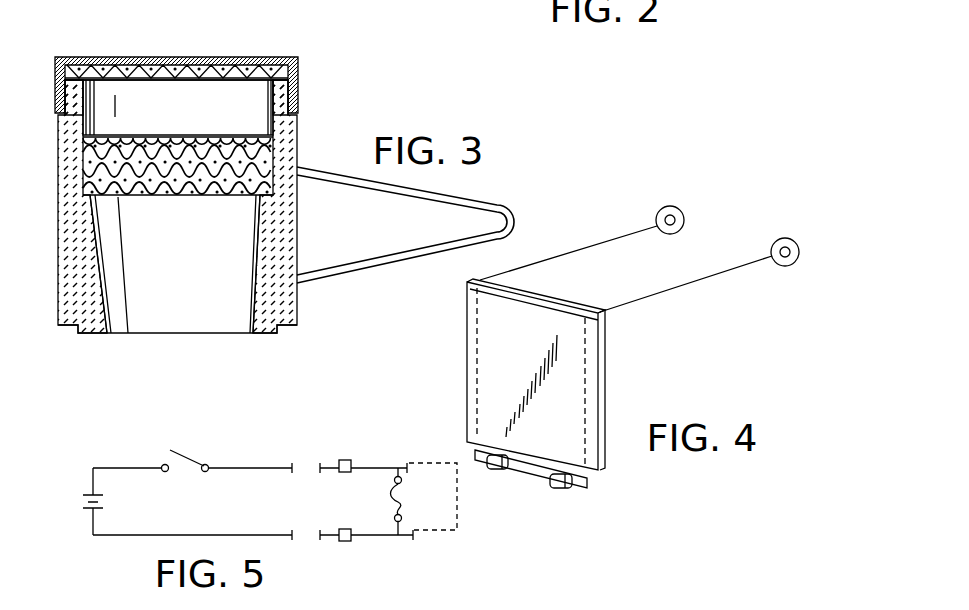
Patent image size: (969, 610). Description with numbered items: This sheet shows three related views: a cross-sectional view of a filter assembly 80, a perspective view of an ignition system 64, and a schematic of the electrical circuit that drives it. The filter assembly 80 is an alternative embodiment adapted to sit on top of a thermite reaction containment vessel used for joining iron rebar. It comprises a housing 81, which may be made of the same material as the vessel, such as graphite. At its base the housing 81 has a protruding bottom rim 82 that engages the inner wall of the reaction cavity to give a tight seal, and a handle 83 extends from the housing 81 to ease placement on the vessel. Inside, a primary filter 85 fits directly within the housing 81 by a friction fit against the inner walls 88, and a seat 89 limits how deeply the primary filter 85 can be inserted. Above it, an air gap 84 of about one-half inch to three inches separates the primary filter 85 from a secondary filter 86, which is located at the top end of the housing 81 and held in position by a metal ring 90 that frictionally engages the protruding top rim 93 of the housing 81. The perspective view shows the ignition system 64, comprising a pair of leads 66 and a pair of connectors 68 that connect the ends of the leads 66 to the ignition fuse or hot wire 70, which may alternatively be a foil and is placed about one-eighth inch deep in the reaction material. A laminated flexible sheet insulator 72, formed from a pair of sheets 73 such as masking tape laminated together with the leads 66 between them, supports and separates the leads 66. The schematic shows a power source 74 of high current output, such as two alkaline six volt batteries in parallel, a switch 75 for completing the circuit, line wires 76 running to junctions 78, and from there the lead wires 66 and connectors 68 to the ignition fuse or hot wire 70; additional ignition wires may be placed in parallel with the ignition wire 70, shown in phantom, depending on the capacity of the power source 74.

In FIG. 4, the ignition system 64 is at (597, 241).
In FIG. 4, the leads 66 is at (615, 240).
In FIG. 5, the leads 66 is at (377, 465).
In FIG. 4, the connectors 68 is at (492, 473).
In FIG. 5, the connectors 68 is at (403, 480).
In FIG. 4, the ignition fuse or hot wire 70 is at (528, 476).
In FIG. 5, the ignition fuse or hot wire 70 is at (379, 499).
In FIG. 4, the laminated flexible sheet insulator 72 is at (609, 342).
In FIG. 4, the sheets 73 is at (607, 375).
In FIG. 5, the power source 74 is at (103, 500).
In FIG. 5, the switch 75 is at (177, 447).
In FIG. 5, the line wires 76 is at (240, 465).
In FIG. 4, the junctions 78 is at (668, 206).
In FIG. 5, the junctions 78 is at (342, 458).
In FIG. 3, the filter assembly 80 is at (311, 51).
In FIG. 3, the housing 81 is at (98, 238).
In FIG. 3, the protruding bottom rim 82 is at (102, 335).
In FIG. 3, the handle 83 is at (463, 200).
In FIG. 3, the air gap 84 is at (192, 92).
In FIG. 3, the primary filter 85 is at (217, 137).
In FIG. 3, the secondary filter 86 is at (280, 70).
In FIG. 3, the inner walls 88 is at (87, 128).
In FIG. 3, the seat 89 is at (98, 200).
In FIG. 3, the metal ring 90 is at (55, 72).
In FIG. 3, the protruding top rim 93 is at (75, 57).